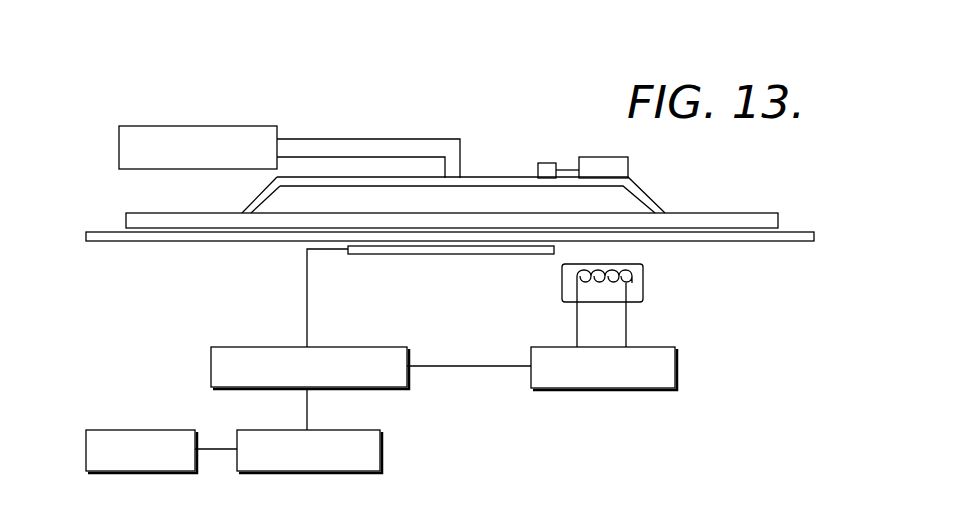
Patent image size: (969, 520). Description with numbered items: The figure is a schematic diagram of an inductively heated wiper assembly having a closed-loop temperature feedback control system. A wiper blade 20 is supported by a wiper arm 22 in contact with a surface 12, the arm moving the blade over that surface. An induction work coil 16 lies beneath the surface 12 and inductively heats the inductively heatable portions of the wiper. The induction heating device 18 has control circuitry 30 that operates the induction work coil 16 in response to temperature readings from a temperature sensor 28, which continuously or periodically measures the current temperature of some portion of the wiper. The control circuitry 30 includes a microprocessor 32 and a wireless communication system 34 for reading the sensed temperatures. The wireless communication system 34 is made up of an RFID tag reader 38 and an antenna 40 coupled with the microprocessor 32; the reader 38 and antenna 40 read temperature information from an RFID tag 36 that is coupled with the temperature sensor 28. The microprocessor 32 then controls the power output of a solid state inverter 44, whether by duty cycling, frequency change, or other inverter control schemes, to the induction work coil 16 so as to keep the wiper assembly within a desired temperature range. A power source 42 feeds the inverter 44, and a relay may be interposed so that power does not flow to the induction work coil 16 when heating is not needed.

The surface 12 is at (139, 237).
The induction work coil 16 is at (453, 254).
The induction heating device 18 is at (402, 412).
The wiper blade 20 is at (748, 217).
The wiper arm 22 is at (347, 140).
The temperature sensor 28 is at (546, 163).
The control circuitry 30 is at (487, 385).
The microprocessor 32 is at (263, 347).
The wireless communication system 34 is at (705, 303).
The RFID tag 36 is at (623, 167).
The RFID tag reader 38 is at (670, 366).
The antenna 40 is at (637, 283).
The power source 42 is at (143, 430).
The solid state inverter 44 is at (372, 451).